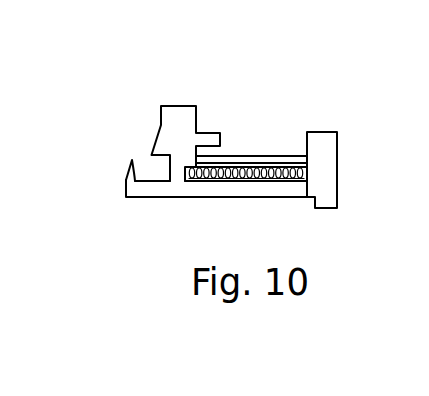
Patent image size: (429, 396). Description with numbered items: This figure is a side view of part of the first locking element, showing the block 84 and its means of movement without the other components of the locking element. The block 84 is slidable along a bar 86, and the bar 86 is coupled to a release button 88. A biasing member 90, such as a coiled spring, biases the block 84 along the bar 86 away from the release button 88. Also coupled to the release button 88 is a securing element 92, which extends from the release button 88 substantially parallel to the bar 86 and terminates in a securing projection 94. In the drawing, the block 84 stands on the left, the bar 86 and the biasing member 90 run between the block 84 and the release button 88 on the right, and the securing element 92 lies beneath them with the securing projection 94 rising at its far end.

The block 84 is at (178, 106).
The bar 86 is at (257, 155).
The release button 88 is at (328, 167).
The biasing member 90 is at (277, 178).
The securing element 92 is at (160, 188).
The securing projection 94 is at (127, 175).